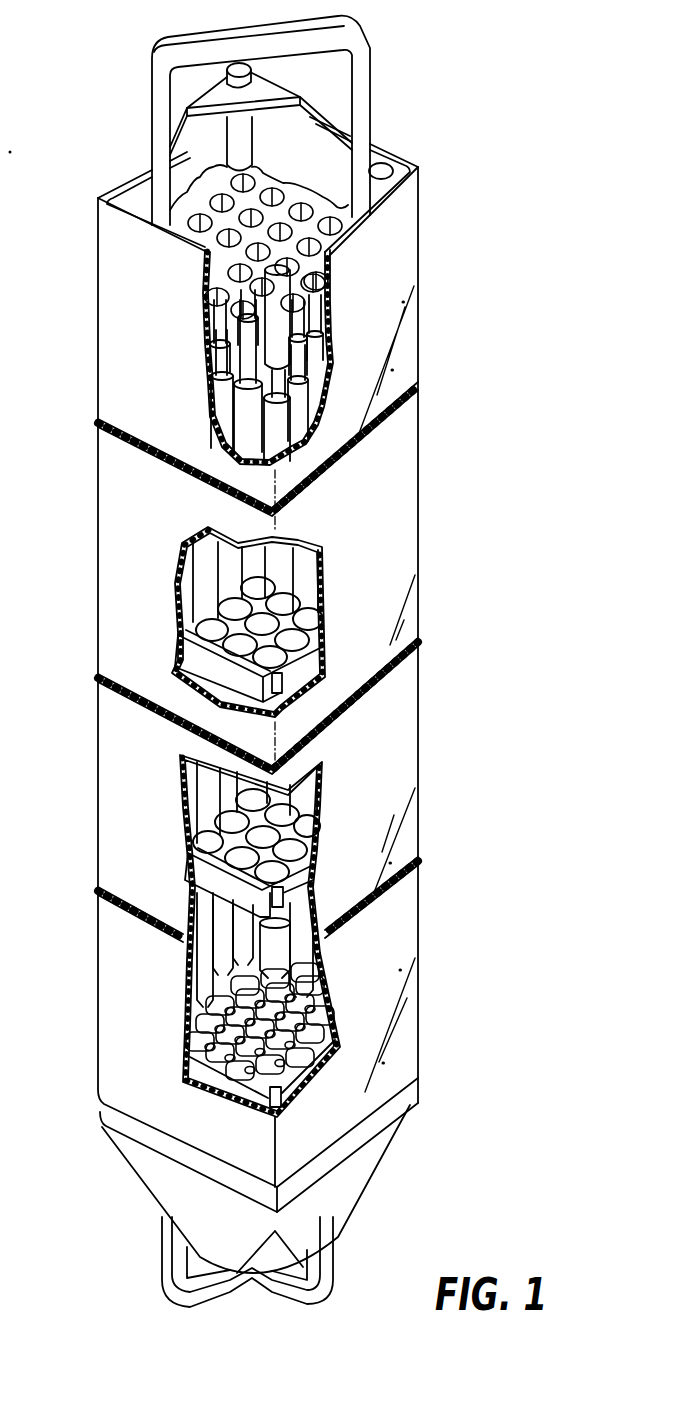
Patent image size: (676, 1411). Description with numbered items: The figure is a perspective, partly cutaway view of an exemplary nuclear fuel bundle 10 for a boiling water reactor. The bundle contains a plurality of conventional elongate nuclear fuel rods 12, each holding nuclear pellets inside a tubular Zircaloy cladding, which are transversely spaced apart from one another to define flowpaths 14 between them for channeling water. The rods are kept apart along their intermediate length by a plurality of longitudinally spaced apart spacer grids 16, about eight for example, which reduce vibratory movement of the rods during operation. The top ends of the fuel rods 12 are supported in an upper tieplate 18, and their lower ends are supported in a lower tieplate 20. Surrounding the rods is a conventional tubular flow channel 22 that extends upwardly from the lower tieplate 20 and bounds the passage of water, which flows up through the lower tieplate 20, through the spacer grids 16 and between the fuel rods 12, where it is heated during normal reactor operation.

The nuclear fuel bundle 10 is at (437, 238).
The nuclear fuel rods 12 is at (250, 412).
The flowpaths 14 is at (310, 570).
The spacer grids 16 is at (308, 663).
The upper tieplate 18 is at (297, 287).
The lower tieplate 20 is at (305, 1083).
The tubular flow channel 22 is at (407, 748).